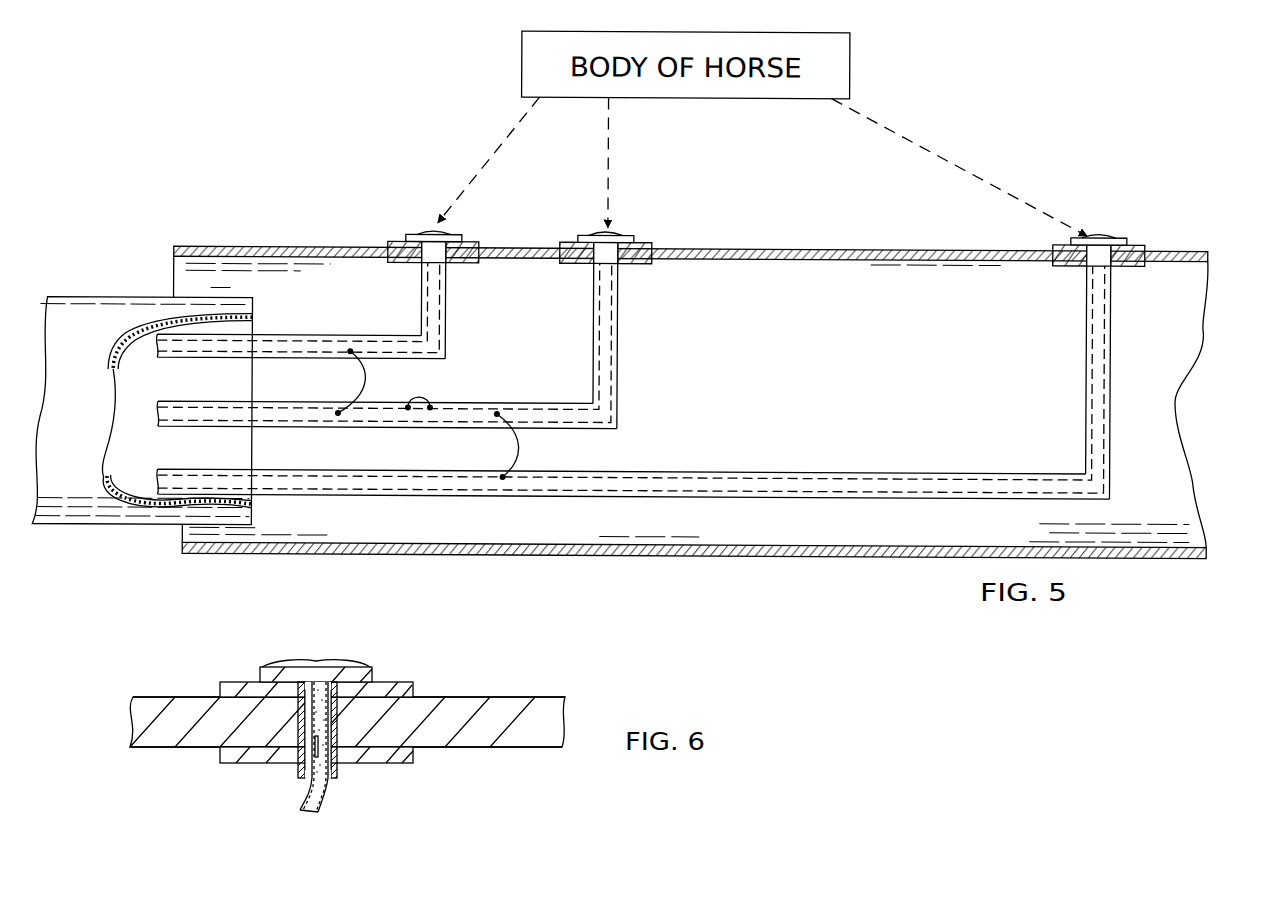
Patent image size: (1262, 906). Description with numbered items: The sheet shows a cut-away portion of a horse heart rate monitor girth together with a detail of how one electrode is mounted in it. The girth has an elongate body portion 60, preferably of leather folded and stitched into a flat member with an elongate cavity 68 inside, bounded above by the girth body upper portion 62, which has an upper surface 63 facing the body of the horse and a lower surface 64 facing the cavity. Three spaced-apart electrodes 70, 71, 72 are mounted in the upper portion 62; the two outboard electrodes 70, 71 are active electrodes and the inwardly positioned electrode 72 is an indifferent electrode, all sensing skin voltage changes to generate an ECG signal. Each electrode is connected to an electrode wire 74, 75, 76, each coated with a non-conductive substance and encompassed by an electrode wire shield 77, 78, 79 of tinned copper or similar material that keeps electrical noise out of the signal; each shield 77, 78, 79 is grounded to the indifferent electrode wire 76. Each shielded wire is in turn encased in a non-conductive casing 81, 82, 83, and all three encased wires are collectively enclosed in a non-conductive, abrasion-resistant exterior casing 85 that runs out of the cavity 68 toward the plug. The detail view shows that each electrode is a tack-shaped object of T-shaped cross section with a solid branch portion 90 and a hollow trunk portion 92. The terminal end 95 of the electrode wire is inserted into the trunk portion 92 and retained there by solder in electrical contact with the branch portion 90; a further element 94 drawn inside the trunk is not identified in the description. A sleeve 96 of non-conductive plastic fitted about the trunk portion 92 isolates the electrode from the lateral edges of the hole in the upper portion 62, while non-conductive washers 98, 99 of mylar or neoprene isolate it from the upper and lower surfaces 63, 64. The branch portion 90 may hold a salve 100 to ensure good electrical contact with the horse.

In FIG. 5, the elongate body portion 60 is at (702, 387).
In FIG. 5, the girth body upper portion 62 is at (950, 249).
In FIG. 6, the girth body upper portion 62 is at (158, 703).
In FIG. 5, the upper surface 63 is at (1012, 249).
In FIG. 6, the upper surface 63 is at (190, 697).
In FIG. 5, the lower surface 64 is at (970, 261).
In FIG. 6, the lower surface 64 is at (152, 750).
In FIG. 5, the elongate cavity 68 is at (1172, 341).
In FIG. 5, the electrode 70 is at (417, 223).
In FIG. 6, the electrode 70 is at (329, 701).
In FIG. 5, the electrode 71 is at (1098, 229).
In FIG. 6, the electrode 71 is at (329, 701).
In FIG. 5, the indifferent electrode 72 is at (617, 226).
In FIG. 6, the indifferent electrode 72 is at (329, 701).
In FIG. 5, the electrode wire 74 is at (318, 347).
In FIG. 5, the electrode wire 75 is at (686, 487).
In FIG. 5, the indifferent electrode wire 76 is at (607, 322).
In FIG. 5, the electrode wire shield 77 is at (383, 342).
In FIG. 5, the electrode wire shield 78 is at (725, 482).
In FIG. 5, the electrode wire shield 79 is at (612, 377).
In FIG. 5, the non-conductive casing 81 is at (258, 313).
In FIG. 6, the non-conductive casing 81 is at (382, 747).
In FIG. 5, the non-conductive casing 82 is at (371, 345).
In FIG. 6, the non-conductive casing 82 is at (382, 747).
In FIG. 5, the non-conductive casing 83 is at (584, 380).
In FIG. 6, the non-conductive casing 83 is at (325, 796).
In FIG. 5, the exterior casing 85 is at (118, 300).
In FIG. 6, the branch portion 90 is at (336, 648).
In FIG. 6, the hollow trunk portion 92 is at (298, 715).
In FIG. 6, the inner sleeve 94 is at (343, 747).
In FIG. 6, the terminal end 95 is at (314, 752).
In FIG. 6, the sleeve 96 is at (334, 732).
In FIG. 6, the non-conductive washer 98 is at (220, 683).
In FIG. 6, the non-conductive washer 99 is at (218, 760).
In FIG. 6, the salve 100 is at (314, 662).